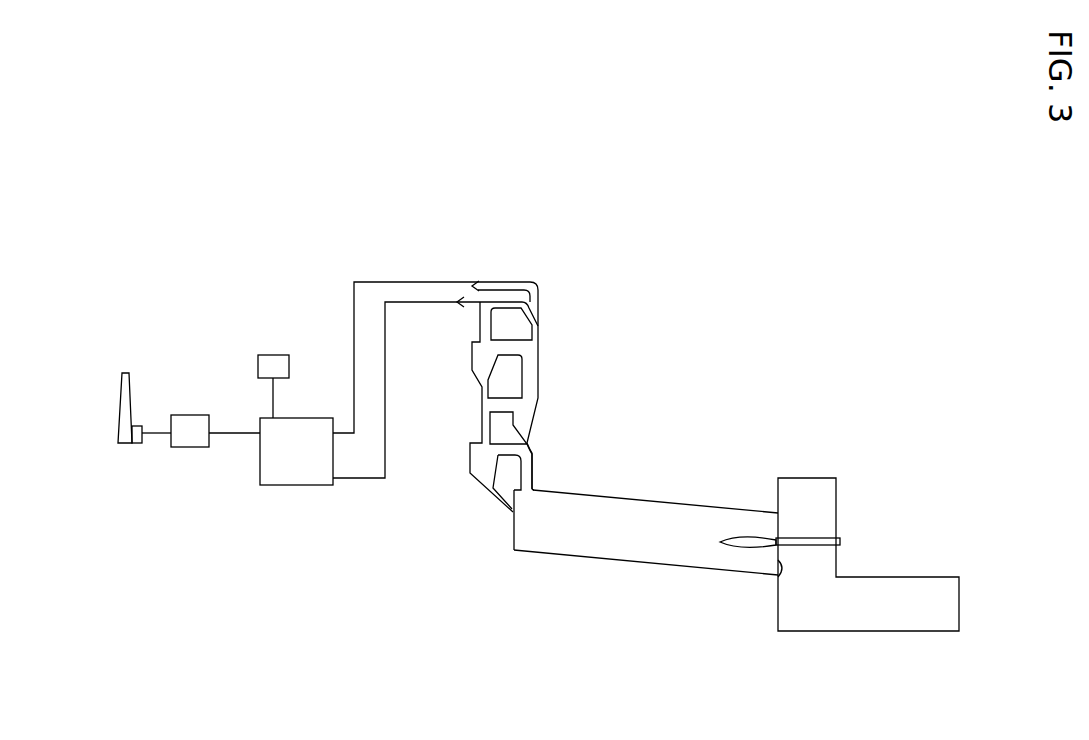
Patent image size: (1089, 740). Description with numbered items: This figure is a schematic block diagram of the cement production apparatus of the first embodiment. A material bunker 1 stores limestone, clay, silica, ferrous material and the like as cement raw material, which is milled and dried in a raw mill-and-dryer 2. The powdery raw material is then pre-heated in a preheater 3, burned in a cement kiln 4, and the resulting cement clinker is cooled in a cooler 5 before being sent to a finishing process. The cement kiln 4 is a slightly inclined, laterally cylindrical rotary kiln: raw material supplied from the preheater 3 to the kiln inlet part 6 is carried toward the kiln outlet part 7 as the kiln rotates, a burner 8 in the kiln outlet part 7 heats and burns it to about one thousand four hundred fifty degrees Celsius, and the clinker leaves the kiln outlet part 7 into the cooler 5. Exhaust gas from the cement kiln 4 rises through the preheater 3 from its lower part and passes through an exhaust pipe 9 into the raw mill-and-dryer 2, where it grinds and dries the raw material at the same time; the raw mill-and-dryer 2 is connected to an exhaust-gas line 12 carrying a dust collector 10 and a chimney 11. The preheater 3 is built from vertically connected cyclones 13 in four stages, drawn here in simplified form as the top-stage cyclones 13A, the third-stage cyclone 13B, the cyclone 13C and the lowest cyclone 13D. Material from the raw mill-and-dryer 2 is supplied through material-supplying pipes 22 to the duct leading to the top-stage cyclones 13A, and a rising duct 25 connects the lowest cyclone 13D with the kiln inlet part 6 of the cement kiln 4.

The material bunker 1 is at (273, 355).
The raw mill-and-dryer 2 is at (282, 485).
The preheater 3 is at (534, 400).
The cement kiln 4 is at (657, 566).
The cooler 5 is at (897, 583).
The kiln inlet part 6 is at (508, 553).
The kiln outlet part 7 is at (777, 585).
The burner 8 is at (810, 540).
The exhaust pipe 9 is at (410, 282).
The dust collector 10 is at (185, 447).
The chimney 11 is at (120, 400).
The exhaust-gas line 12 is at (233, 427).
The cyclones 13 is at (534, 400).
The cyclone of top stage 13A is at (542, 305).
The cyclone of third stage 13B is at (473, 371).
The third heat exchange tube 13C is at (536, 413).
The lowest cyclone 13D is at (471, 466).
The material-supplying pipe 22 is at (410, 305).
The rising duct 25 is at (532, 473).